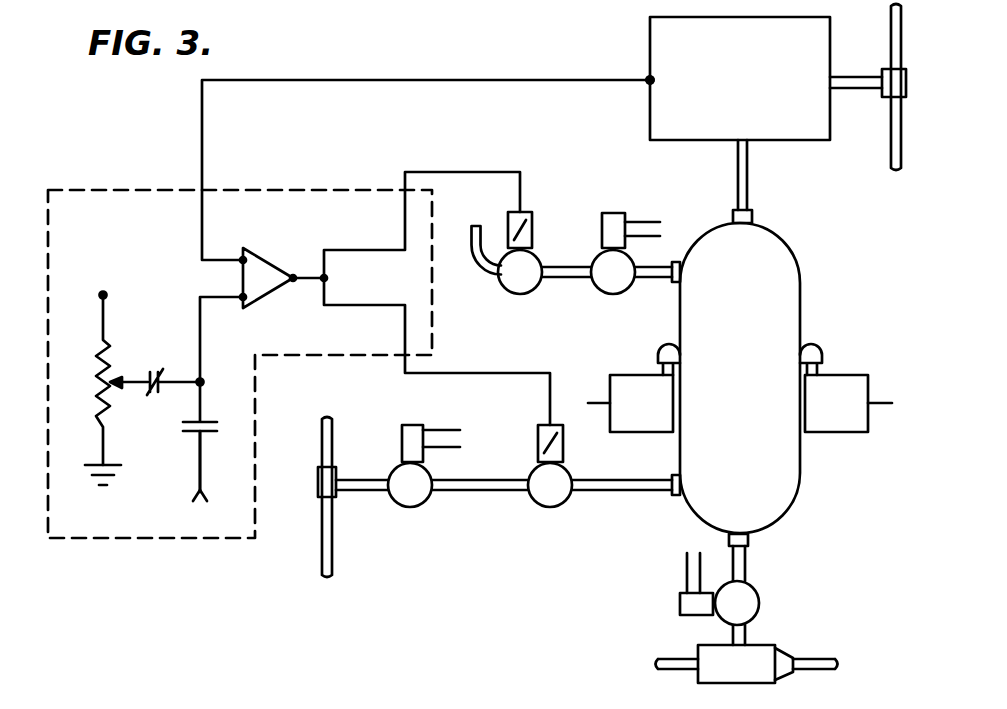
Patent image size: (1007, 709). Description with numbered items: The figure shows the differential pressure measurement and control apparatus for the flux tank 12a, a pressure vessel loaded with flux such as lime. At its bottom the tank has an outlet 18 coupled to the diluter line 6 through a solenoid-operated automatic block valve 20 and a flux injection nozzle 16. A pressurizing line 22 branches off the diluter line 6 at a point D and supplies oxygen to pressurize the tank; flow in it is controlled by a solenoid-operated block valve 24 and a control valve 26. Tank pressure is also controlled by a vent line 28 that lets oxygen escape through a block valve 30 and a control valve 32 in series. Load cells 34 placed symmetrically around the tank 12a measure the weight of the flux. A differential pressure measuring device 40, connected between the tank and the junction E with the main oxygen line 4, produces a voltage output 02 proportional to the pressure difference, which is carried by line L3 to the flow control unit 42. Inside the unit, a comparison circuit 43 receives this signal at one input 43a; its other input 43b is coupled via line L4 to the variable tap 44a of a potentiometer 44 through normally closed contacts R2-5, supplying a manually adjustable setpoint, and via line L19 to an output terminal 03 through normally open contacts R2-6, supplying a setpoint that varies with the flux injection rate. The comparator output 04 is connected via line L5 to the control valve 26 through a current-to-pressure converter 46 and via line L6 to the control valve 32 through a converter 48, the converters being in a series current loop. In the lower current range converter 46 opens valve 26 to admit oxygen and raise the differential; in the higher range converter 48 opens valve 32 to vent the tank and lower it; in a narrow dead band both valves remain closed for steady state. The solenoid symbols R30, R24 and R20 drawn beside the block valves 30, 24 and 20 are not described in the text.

The differential pressure measuring device 40 is at (740, 120).
The main oxygen line 4 is at (906, 42).
The voltage output 02 is at (648, 83).
The line L3 is at (386, 79).
The flow control unit 42 is at (302, 188).
The comparison circuit 43 is at (269, 255).
The input 43a is at (243, 256).
The input 43b is at (243, 302).
The output 04 is at (293, 274).
The line L6 is at (462, 172).
The line L5 is at (492, 373).
The junction E is at (97, 283).
The potentiometer 44 is at (101, 376).
The variable tap 44a is at (116, 376).
The normally closed contacts R2-5 is at (167, 366).
The line L4 is at (200, 377).
The normally open contacts R2-6 is at (169, 437).
The line L19 is at (203, 456).
The output terminal 03 is at (195, 508).
The flux tank 12a is at (722, 417).
The load cells 34 is at (622, 375).
The control valve 32 is at (516, 295).
The current-to-pressure converter 48 is at (533, 229).
The vent line 28 is at (468, 249).
The block valve 30 is at (620, 295).
The relay solenoid R30 is at (637, 219).
The diluter line 6 is at (320, 539).
The point D is at (318, 484).
The solenoid-operated block valve 24 is at (410, 508).
The relay solenoid R24 is at (432, 430).
The pressurizing line 22 is at (485, 493).
The control valve 26 is at (550, 508).
The current-to-pressure converter 46 is at (563, 439).
The outlet 18 is at (748, 545).
The solenoid-operated automatic block valve 20 is at (760, 596).
The relay solenoid R20 is at (670, 581).
The flux injection nozzle 16 is at (768, 648).